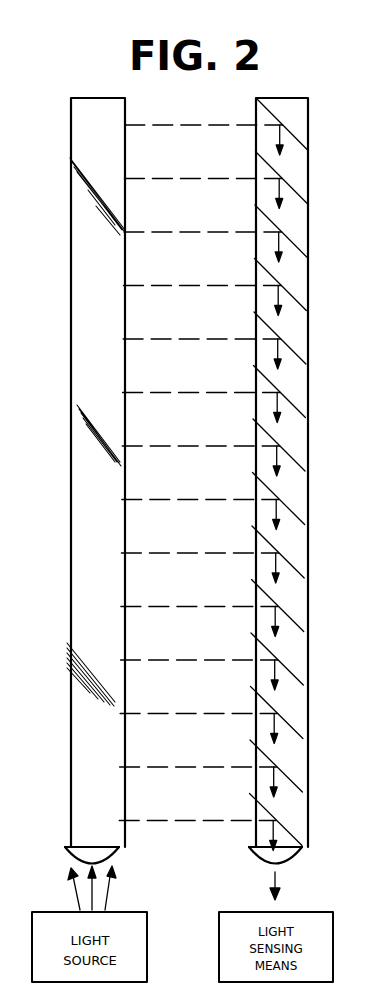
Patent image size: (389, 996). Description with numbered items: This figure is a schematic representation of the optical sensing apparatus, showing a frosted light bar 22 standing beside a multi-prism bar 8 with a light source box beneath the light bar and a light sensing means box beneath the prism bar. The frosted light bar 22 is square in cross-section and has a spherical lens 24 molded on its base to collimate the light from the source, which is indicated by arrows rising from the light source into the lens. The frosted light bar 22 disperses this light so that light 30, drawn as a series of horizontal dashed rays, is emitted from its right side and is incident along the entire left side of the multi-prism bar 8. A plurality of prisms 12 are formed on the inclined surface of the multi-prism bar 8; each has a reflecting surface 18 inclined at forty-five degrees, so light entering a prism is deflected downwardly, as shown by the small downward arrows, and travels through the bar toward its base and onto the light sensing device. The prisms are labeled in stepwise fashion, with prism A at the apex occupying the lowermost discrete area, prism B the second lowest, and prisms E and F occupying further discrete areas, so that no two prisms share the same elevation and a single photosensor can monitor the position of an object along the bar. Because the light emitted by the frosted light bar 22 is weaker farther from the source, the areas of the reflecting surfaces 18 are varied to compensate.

The multi-prism bar 8 is at (308, 297).
The prisms 12 is at (264, 279).
The reflecting surface 18 is at (296, 567).
The frosted light bar 22 is at (80, 443).
The spherical lens 24 is at (80, 855).
The light 30 is at (171, 178).
The prism A is at (293, 133).
The prism B is at (291, 187).
The prism E is at (296, 356).
The prism F is at (292, 405).